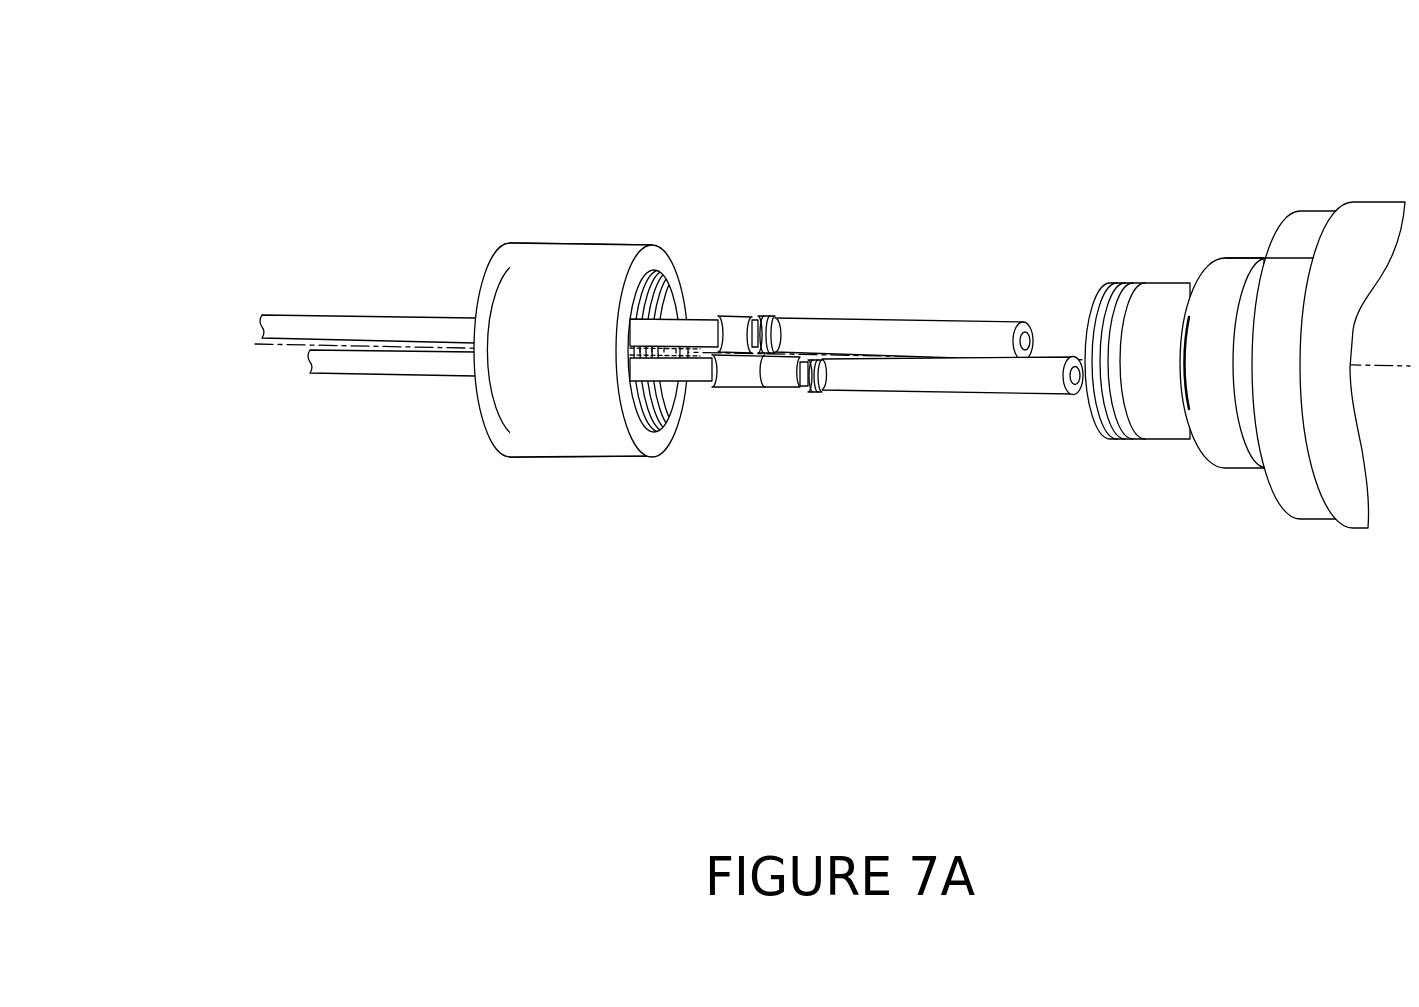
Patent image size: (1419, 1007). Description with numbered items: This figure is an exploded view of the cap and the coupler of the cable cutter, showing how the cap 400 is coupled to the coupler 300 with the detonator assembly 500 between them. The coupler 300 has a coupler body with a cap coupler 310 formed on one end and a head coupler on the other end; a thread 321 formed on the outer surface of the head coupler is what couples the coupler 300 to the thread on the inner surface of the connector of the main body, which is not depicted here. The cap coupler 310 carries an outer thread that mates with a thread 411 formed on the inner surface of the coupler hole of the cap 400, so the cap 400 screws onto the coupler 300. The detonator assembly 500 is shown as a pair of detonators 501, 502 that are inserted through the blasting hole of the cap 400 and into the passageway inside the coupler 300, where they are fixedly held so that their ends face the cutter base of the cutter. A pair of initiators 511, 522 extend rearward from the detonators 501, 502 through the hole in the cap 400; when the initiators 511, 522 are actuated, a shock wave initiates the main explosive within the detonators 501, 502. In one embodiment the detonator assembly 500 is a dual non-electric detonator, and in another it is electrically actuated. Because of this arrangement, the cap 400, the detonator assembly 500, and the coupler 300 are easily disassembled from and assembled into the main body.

The coupler 300 is at (1231, 362).
The cap coupler 310 is at (1233, 263).
The thread 321 is at (1128, 283).
The cap 400 is at (667, 253).
The thread 411 is at (633, 317).
The detonator assembly 500 is at (860, 389).
The detonator 501 is at (1040, 380).
The detonator 502 is at (932, 328).
The initiator 511 is at (352, 362).
The initiator 522 is at (298, 327).